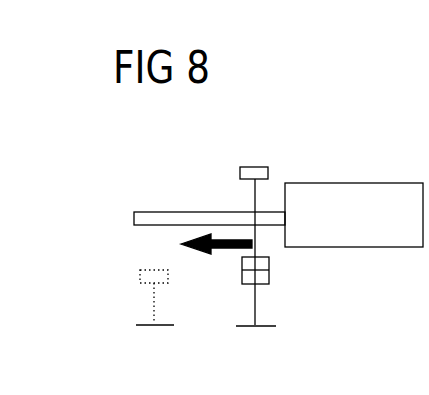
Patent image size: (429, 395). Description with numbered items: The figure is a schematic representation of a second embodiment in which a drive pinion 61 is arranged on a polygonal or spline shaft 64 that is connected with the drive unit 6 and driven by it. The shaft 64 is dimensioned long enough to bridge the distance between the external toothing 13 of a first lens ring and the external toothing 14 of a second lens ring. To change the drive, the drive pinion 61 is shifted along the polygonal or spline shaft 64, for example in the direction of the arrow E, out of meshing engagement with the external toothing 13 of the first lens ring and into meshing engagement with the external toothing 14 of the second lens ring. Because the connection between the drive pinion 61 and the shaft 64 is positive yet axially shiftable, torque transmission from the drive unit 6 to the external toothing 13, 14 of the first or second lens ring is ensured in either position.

The drive unit 6 is at (389, 191).
The external toothing of the first lens ring 13 is at (266, 277).
The external toothing of the second lens ring 14 is at (142, 282).
The drive pinion 61 is at (257, 165).
The polygonal or spline shaft 64 is at (172, 210).
The arrow E is at (220, 254).